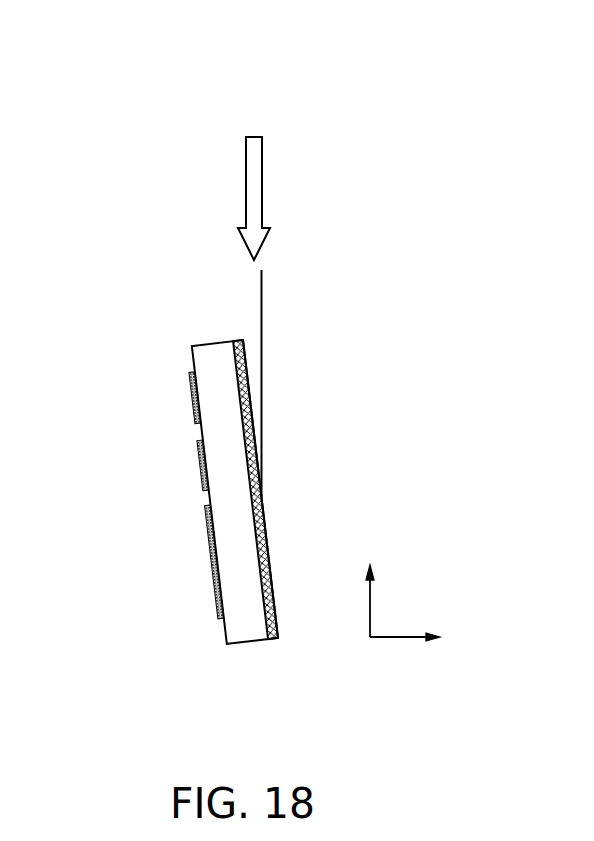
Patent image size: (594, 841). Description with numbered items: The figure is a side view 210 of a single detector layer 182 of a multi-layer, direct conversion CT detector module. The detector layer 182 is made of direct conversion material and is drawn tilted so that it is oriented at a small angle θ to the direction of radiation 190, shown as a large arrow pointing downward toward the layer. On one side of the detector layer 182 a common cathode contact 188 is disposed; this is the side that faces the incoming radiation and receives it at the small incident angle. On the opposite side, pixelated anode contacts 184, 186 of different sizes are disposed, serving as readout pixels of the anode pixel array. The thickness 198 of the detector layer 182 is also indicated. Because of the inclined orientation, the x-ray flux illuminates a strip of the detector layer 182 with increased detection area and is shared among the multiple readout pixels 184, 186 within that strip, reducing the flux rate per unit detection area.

The side view 210 is at (363, 108).
The direction of radiation 190 is at (245, 162).
The thickness 198 is at (253, 408).
The detector layer 182 is at (212, 345).
The common cathode contact 188 is at (267, 555).
The pixelated anode contacts 184 is at (191, 396).
The pixelated anode contact 186 is at (211, 574).